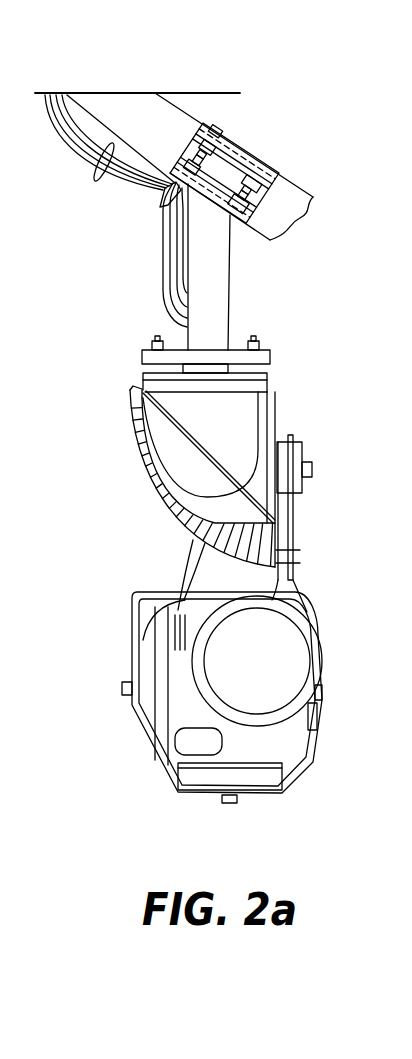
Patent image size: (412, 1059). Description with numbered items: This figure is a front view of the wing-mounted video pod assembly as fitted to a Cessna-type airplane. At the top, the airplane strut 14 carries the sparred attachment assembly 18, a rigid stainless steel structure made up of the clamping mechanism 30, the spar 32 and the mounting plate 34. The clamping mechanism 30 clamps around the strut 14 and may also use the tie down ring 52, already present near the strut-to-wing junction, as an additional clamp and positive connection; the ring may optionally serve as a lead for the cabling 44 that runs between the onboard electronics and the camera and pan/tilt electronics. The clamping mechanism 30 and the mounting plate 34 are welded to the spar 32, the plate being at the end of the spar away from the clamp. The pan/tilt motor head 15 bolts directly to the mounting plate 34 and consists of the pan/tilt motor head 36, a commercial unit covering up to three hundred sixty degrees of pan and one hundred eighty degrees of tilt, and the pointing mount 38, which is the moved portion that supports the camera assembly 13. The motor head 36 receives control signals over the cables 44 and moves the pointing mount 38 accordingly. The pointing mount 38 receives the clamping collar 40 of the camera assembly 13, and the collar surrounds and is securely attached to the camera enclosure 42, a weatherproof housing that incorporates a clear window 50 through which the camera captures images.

The camera assembly 13 is at (108, 686).
The strut 14 is at (140, 120).
The pan/tilt motor head 15 is at (286, 396).
The sparred attachment assembly 18 is at (248, 275).
The clamping mechanism 30 is at (242, 147).
The spar 32 is at (210, 277).
The mounting plate 34 is at (141, 358).
The pan/tilt motor head 36 is at (172, 457).
The pointing mount 38 is at (313, 470).
The clamping collar 40 is at (132, 642).
The camera enclosure 42 is at (168, 757).
The cabling 44 is at (95, 173).
The clear window 50 is at (290, 613).
The tie down ring 52 is at (163, 203).